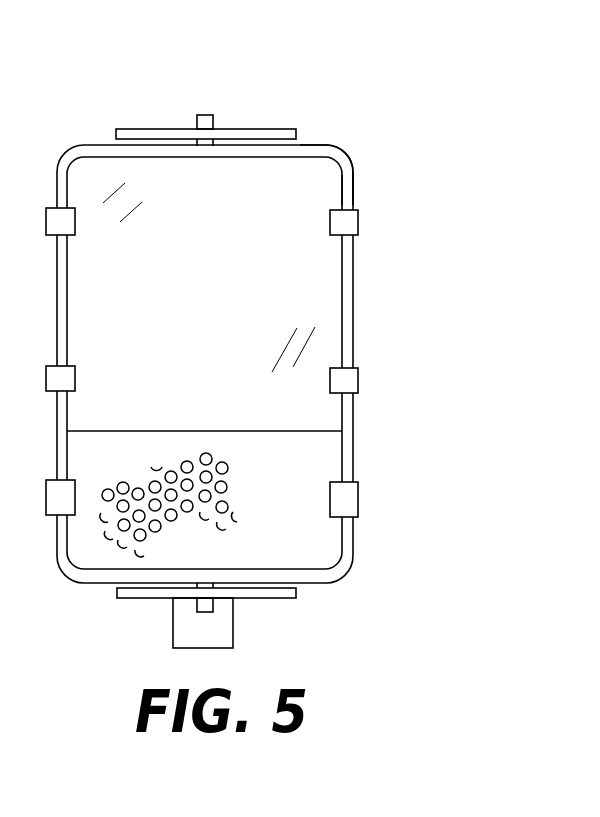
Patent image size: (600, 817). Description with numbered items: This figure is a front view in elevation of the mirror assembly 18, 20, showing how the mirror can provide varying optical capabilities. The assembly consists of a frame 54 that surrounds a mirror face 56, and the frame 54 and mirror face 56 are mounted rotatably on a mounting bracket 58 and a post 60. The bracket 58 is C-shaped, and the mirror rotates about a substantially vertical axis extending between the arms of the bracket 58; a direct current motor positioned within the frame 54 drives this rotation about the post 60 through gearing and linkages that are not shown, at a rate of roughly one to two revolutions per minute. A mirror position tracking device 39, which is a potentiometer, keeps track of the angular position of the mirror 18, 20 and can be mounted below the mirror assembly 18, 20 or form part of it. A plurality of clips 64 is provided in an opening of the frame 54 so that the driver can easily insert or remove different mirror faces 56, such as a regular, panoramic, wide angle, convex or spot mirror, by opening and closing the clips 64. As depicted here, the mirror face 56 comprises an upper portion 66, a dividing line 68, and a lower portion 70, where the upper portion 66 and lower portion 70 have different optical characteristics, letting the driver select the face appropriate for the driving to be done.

The mirror assembly 18 is at (231, 104).
The mirror assembly 20 is at (248, 117).
The mirror position tracking device 39 is at (236, 630).
The frame 54 is at (57, 148).
The mirror face 56 is at (315, 192).
The mounting bracket 58 is at (325, 144).
The post 60 is at (197, 115).
The clips 64 is at (62, 379).
The upper portion 66 is at (246, 256).
The dividing line 68 is at (172, 427).
The lower portion 70 is at (313, 457).